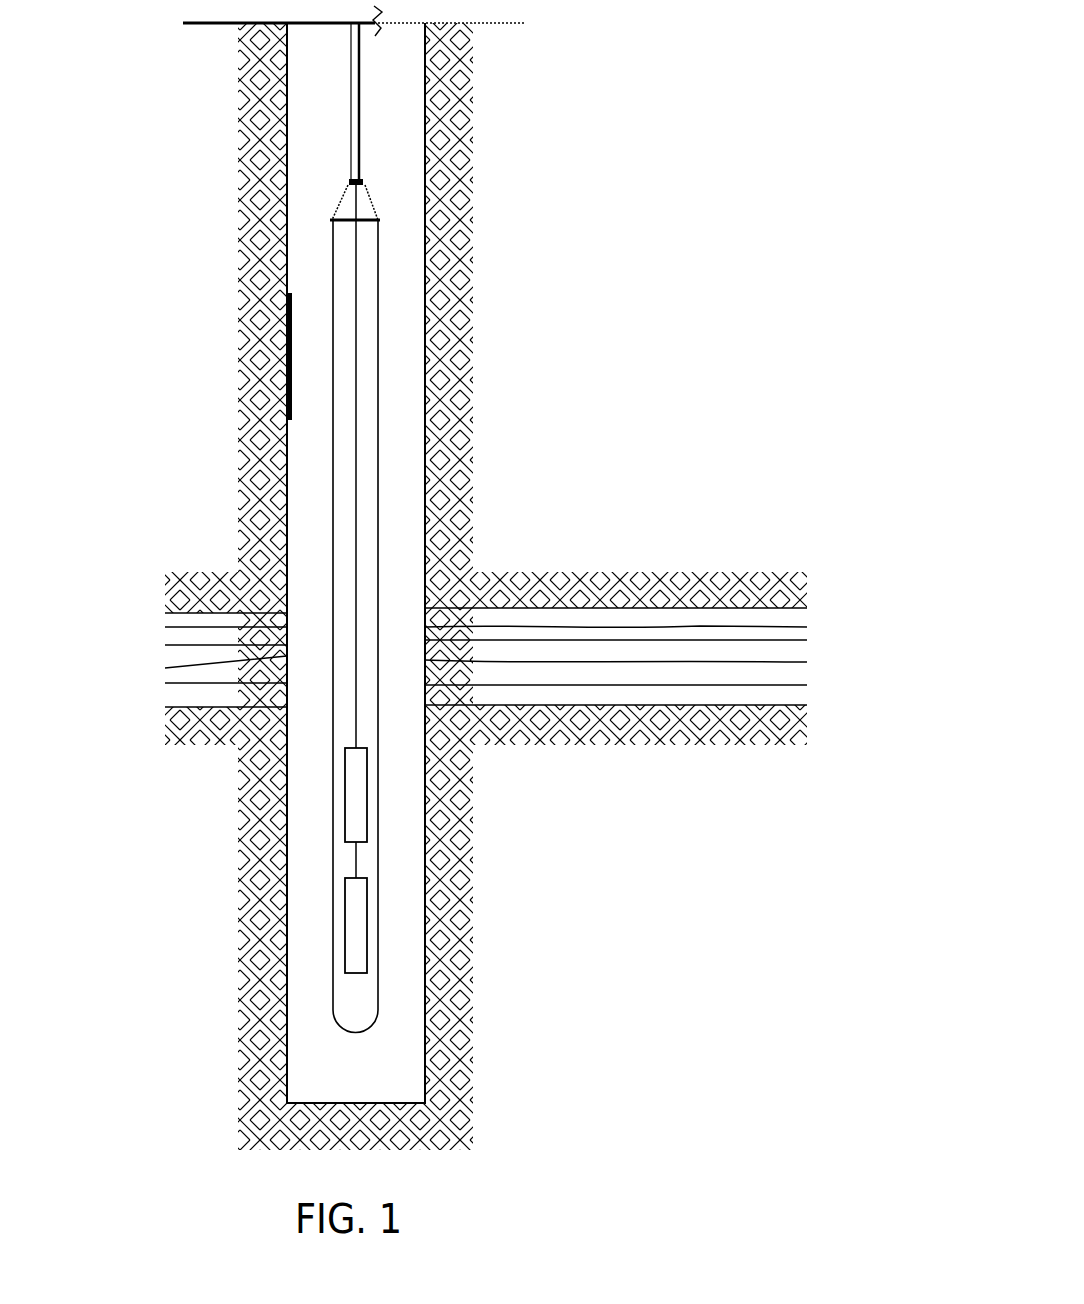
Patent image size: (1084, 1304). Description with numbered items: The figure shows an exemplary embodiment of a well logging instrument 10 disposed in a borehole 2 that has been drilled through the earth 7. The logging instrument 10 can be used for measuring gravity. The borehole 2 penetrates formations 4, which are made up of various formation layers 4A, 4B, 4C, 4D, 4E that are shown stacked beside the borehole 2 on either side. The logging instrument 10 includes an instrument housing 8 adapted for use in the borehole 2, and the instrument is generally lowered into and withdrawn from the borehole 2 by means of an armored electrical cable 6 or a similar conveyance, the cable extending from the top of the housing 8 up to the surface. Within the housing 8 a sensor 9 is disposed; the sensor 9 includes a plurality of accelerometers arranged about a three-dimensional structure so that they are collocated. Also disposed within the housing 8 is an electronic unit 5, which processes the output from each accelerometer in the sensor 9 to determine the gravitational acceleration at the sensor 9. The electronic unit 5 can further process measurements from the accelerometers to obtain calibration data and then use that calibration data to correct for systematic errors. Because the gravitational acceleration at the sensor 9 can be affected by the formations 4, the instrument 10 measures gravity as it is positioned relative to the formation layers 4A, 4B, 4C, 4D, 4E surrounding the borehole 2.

The borehole 2 is at (403, 97).
The formations 4 is at (165, 663).
The formation layer 4A is at (807, 612).
The formation layer 4B is at (807, 628).
The formation layer 4C is at (807, 650).
The formation layer 4D is at (807, 672).
The formation layer 4E is at (807, 692).
The electronic unit 5 is at (344, 768).
The armored electrical cable 6 is at (360, 105).
The earth 7 is at (457, 940).
The instrument housing 8 is at (333, 427).
The sensor 9 is at (344, 897).
The well logging instrument 10 is at (396, 292).